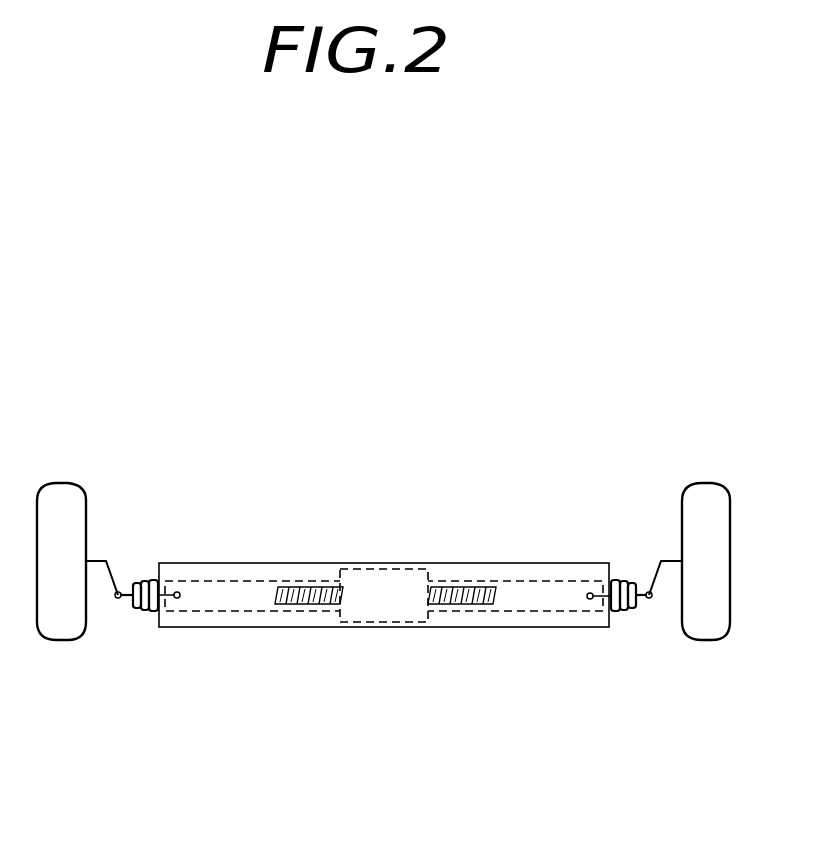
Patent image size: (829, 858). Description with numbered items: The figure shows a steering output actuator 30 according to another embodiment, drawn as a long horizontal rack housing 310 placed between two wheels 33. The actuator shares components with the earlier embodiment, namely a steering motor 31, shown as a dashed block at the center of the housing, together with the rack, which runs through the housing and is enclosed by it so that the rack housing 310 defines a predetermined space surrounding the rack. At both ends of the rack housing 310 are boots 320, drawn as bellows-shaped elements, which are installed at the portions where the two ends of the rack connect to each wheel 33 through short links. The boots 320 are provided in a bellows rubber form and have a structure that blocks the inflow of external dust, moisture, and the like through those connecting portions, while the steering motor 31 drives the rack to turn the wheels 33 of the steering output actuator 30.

The steering output actuator 30 is at (383, 579).
The steering motor 31 is at (383, 623).
The wheels 33 is at (58, 641).
The rack housing 310 is at (595, 628).
The boots 320 is at (140, 611).